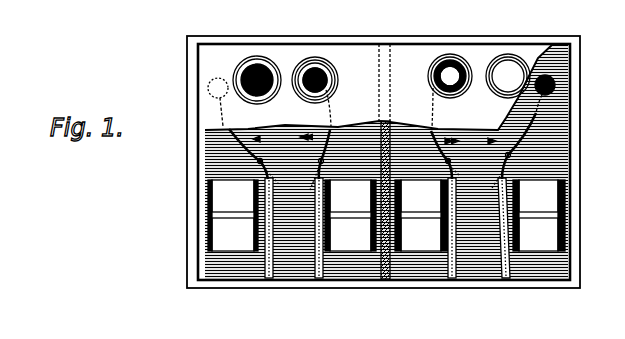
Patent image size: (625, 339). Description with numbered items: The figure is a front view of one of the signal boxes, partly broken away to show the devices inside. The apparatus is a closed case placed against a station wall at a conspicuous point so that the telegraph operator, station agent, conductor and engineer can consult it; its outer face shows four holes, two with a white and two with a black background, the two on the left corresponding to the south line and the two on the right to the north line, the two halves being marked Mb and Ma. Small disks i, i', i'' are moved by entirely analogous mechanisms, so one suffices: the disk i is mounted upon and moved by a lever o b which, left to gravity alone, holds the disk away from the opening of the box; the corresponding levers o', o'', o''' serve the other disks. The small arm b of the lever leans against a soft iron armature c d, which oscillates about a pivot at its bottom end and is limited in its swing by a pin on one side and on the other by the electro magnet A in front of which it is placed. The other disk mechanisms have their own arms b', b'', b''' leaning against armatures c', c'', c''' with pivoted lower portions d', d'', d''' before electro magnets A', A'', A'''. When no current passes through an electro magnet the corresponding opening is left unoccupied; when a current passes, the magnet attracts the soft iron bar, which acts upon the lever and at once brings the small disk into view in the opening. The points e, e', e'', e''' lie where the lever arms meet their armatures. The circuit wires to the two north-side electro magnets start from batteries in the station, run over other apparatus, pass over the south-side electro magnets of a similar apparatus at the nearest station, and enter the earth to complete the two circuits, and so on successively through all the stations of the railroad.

The magnet pole b Mb is at (285, 58).
The magnet pole a Ma is at (479, 55).
The small disk i is at (218, 88).
The small disk i' is at (326, 80).
The small disk i'' is at (450, 76).
The lever o is at (227, 112).
The lever o' is at (336, 108).
The lever o'' is at (425, 108).
The lever o''' is at (553, 94).
The electro magnet A is at (233, 215).
The electro magnet A' is at (350, 215).
The electro magnet A'' is at (421, 215).
The electro magnet A''' is at (539, 215).
The small arm of lever b is at (248, 154).
The small arm of lever b' is at (330, 154).
The small arm of lever b'' is at (439, 155).
The small arm of lever b''' is at (519, 146).
The soft iron armature c is at (275, 179).
The soft iron armature c' is at (309, 186).
The soft iron armature c'' is at (460, 169).
The soft iron armature c''' is at (491, 185).
The soft iron armature d is at (273, 228).
The soft iron armature d' is at (326, 228).
The soft iron armature d'' is at (462, 228).
The soft iron armature d''' is at (516, 228).
The junction valve e is at (268, 167).
The junction valve e' is at (315, 167).
The junction valve e'' is at (459, 175).
The junction valve e''' is at (500, 160).